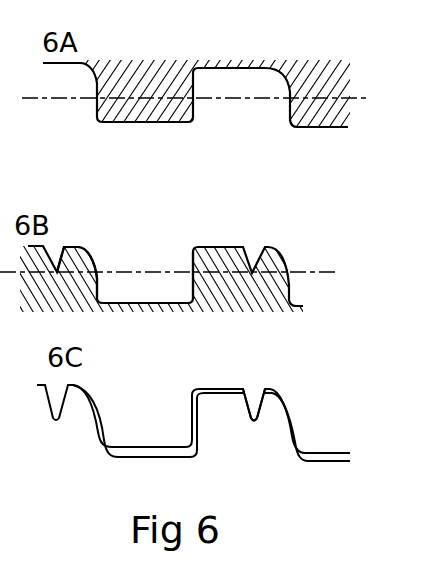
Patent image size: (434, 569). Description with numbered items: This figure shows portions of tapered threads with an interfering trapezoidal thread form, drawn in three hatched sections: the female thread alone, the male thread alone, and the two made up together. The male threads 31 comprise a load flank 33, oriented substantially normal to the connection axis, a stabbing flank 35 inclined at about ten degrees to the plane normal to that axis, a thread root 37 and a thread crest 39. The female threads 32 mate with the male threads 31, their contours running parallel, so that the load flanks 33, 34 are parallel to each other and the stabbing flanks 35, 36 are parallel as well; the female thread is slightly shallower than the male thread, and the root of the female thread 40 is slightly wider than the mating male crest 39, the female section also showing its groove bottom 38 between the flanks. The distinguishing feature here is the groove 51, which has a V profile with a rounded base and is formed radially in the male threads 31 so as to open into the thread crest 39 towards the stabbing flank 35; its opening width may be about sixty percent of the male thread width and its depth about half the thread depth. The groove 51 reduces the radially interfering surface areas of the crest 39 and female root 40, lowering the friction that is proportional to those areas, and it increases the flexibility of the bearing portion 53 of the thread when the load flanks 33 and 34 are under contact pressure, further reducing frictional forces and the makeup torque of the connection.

The male threads 31 is at (218, 288).
The female threads 32 is at (146, 76).
The load flank 33 is at (193, 264).
The load flank 34 is at (197, 97).
The stabbing flank 35 is at (102, 278).
The stabbing flank 36 is at (287, 101).
The thread root 37 is at (168, 301).
The groove bottom 38 is at (151, 126).
The thread crest 39 is at (228, 247).
The root of the female thread 40 is at (52, 65).
The groove 51 is at (60, 248).
The bearing portion 53 is at (217, 411).